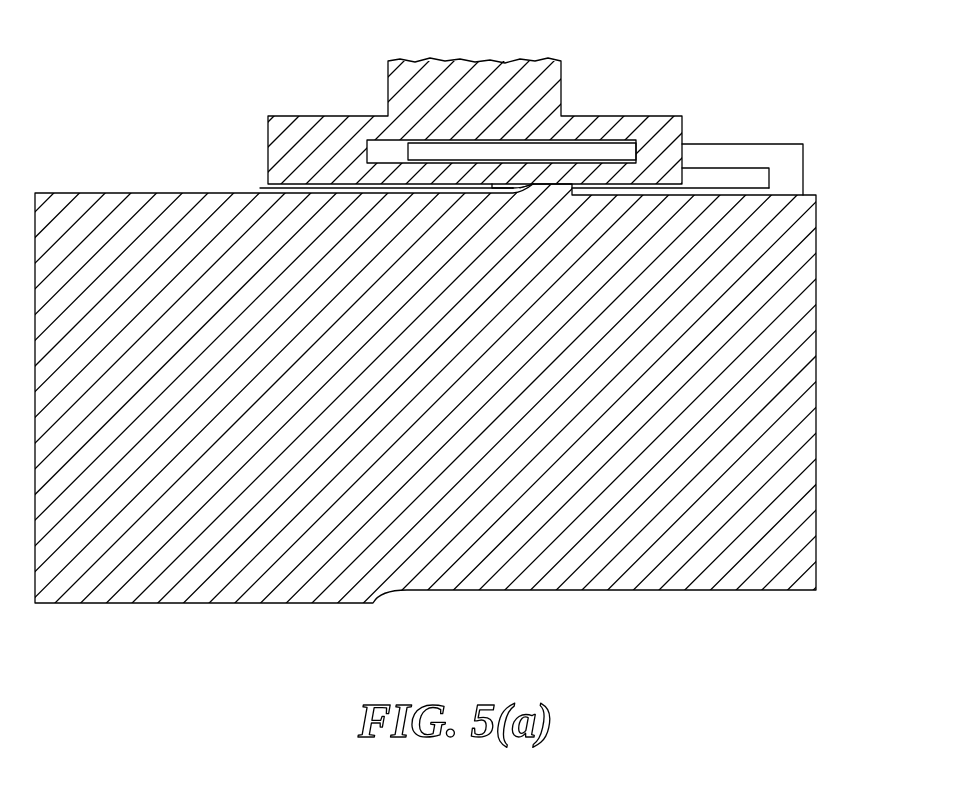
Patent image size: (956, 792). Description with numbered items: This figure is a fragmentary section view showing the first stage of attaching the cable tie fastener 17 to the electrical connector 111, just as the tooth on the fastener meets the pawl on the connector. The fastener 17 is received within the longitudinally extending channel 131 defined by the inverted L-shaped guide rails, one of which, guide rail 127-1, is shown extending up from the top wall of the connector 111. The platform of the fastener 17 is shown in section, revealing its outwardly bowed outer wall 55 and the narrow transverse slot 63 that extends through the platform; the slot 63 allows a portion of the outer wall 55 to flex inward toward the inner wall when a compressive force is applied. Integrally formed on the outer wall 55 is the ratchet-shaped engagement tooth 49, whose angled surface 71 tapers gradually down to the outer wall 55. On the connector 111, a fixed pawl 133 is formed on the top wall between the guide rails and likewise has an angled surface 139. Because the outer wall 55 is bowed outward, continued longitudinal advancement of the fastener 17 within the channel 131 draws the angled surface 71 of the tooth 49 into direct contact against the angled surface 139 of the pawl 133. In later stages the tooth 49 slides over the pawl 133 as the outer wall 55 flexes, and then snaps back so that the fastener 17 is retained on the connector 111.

The electrical connector 111 is at (712, 590).
The fastener 17 is at (288, 115).
The transverse slot 63 is at (377, 147).
The outer wall 55 is at (578, 173).
The engagement tooth 49 is at (260, 188).
The angled surface 71 is at (517, 184).
The angled surface 139 is at (528, 185).
The guide rail 127-1 is at (725, 155).
The channel 131 is at (757, 178).
The pawl 133 is at (769, 188).